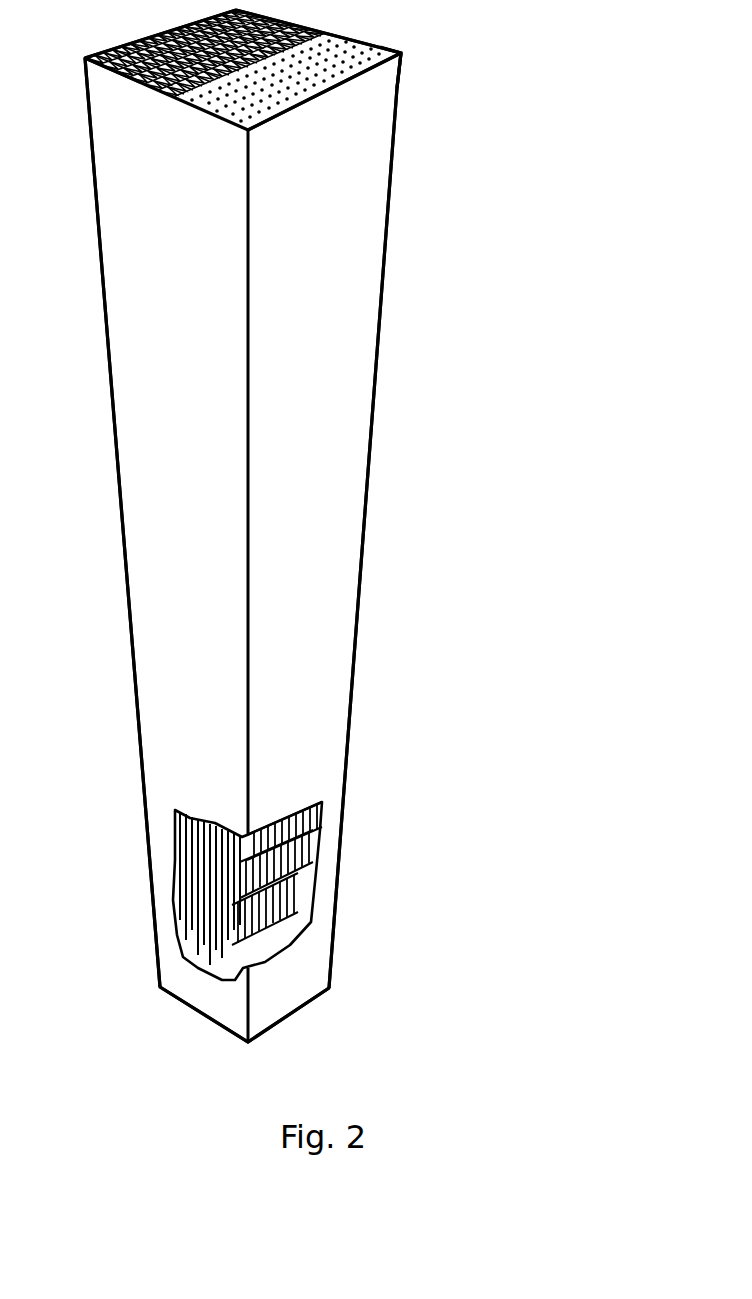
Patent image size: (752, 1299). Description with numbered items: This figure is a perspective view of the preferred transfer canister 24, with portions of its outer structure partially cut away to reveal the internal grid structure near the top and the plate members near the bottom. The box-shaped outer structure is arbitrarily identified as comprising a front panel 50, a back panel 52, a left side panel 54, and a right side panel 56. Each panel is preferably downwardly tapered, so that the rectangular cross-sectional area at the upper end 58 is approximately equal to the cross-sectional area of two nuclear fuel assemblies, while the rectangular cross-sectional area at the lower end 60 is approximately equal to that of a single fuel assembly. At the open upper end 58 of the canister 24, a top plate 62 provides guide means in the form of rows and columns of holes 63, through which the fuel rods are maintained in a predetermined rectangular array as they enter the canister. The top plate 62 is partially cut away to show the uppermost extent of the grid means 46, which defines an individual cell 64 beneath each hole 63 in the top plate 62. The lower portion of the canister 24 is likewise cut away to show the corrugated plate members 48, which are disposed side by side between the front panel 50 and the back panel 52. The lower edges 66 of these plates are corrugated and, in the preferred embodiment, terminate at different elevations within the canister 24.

The transfer canister 24 is at (400, 393).
The grid means 46 is at (113, 62).
The corrugated plate members 48 is at (320, 842).
The front panel 50 is at (138, 245).
The back panel 52 is at (288, 23).
The left side panel 54 is at (166, 42).
The right side panel 56 is at (355, 242).
The upper end 58 is at (352, 80).
The lower end 60 is at (293, 1017).
The top plate 62 is at (345, 35).
The holes 63 is at (390, 50).
The individual cell 64 is at (128, 73).
The lower edges 66 is at (320, 860).